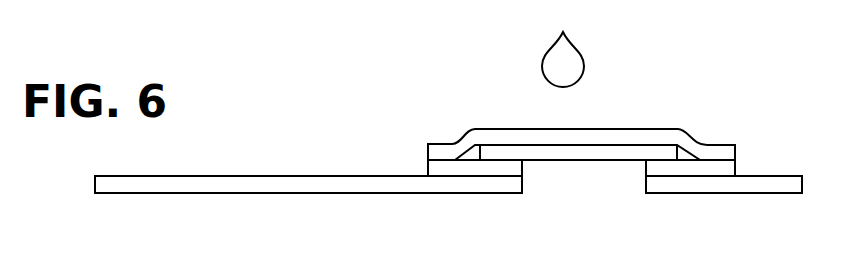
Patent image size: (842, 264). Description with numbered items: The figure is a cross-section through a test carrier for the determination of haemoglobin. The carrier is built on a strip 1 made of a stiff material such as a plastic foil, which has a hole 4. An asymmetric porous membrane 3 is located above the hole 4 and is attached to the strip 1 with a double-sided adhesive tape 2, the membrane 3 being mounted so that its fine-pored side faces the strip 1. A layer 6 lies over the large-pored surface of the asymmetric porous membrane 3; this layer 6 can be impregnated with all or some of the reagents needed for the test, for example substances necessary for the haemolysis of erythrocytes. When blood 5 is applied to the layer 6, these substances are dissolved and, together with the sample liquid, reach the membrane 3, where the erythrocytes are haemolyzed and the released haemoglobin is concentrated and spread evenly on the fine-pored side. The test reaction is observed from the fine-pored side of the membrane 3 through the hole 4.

The strip 1 is at (264, 184).
The double-sided adhesive tape 2 is at (438, 171).
The asymmetric porous membrane 3 is at (627, 152).
The hole 4 is at (586, 192).
The blood 5 is at (567, 62).
The layer 6 is at (528, 137).